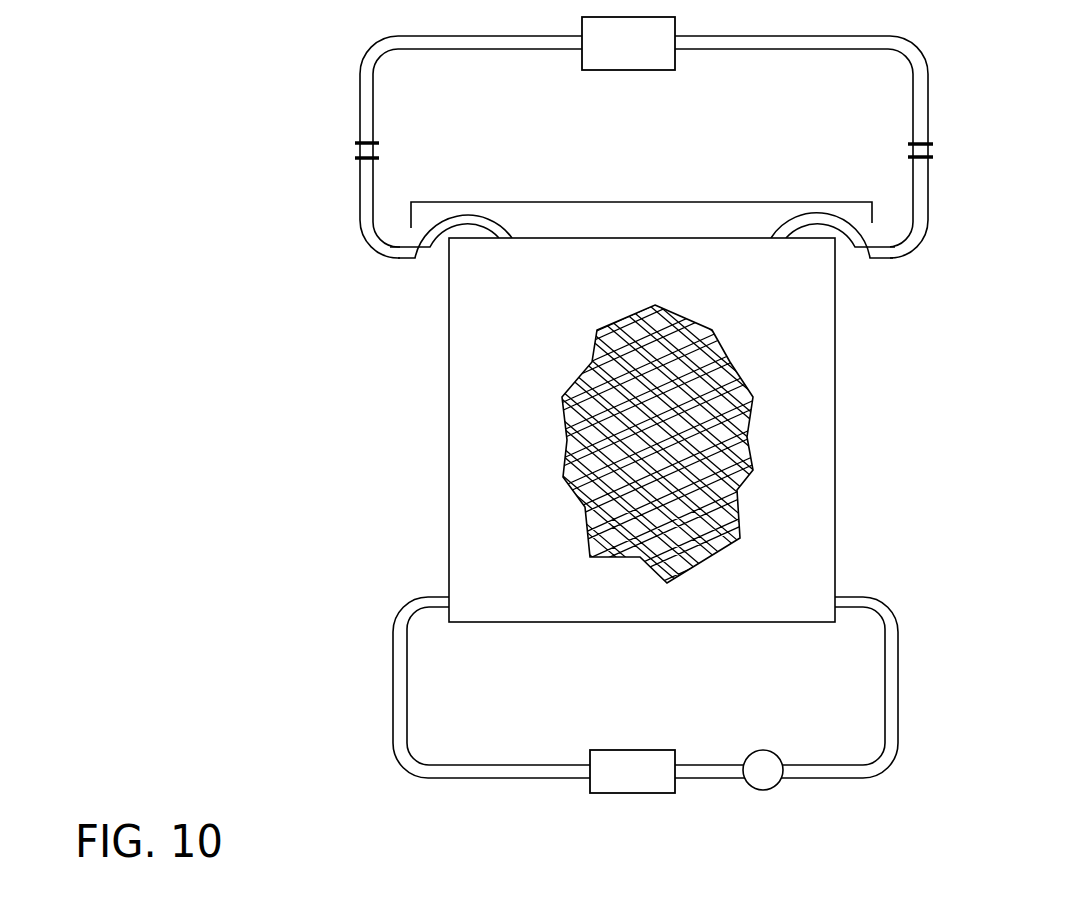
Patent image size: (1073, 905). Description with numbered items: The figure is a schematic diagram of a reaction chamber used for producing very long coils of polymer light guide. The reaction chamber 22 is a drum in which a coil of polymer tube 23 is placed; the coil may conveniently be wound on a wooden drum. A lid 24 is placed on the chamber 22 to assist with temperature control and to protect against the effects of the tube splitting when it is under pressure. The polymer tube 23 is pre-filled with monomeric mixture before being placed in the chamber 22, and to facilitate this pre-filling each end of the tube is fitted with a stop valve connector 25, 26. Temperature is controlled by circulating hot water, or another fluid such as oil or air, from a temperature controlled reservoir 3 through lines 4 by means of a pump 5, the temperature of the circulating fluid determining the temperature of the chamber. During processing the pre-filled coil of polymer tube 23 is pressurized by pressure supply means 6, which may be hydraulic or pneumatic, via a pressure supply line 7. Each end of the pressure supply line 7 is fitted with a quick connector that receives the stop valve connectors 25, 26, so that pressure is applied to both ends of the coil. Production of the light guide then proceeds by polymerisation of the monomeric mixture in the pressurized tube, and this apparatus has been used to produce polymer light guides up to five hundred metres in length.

The temperature controlled reservoir 3 is at (641, 785).
The lines 4 is at (893, 666).
The pump 5 is at (772, 785).
The pressure supply means 6 is at (639, 58).
The pressure supply line 7 is at (738, 40).
The reaction chamber 22 is at (801, 563).
The coil of polymer tube 23 is at (590, 360).
The lid 24 is at (583, 201).
The stop valve connector 25 is at (920, 150).
The stop valve connector 26 is at (366, 152).